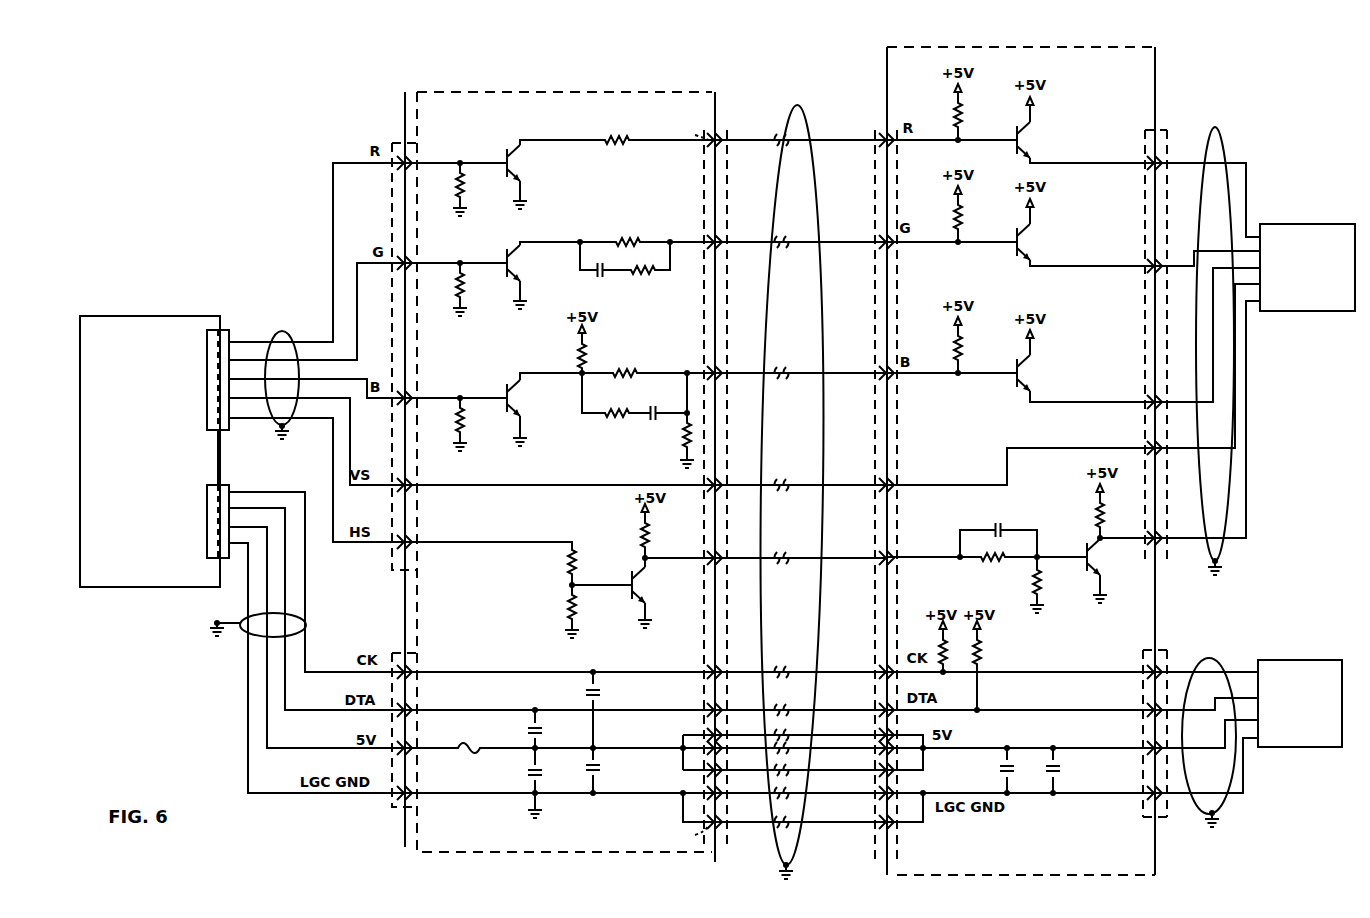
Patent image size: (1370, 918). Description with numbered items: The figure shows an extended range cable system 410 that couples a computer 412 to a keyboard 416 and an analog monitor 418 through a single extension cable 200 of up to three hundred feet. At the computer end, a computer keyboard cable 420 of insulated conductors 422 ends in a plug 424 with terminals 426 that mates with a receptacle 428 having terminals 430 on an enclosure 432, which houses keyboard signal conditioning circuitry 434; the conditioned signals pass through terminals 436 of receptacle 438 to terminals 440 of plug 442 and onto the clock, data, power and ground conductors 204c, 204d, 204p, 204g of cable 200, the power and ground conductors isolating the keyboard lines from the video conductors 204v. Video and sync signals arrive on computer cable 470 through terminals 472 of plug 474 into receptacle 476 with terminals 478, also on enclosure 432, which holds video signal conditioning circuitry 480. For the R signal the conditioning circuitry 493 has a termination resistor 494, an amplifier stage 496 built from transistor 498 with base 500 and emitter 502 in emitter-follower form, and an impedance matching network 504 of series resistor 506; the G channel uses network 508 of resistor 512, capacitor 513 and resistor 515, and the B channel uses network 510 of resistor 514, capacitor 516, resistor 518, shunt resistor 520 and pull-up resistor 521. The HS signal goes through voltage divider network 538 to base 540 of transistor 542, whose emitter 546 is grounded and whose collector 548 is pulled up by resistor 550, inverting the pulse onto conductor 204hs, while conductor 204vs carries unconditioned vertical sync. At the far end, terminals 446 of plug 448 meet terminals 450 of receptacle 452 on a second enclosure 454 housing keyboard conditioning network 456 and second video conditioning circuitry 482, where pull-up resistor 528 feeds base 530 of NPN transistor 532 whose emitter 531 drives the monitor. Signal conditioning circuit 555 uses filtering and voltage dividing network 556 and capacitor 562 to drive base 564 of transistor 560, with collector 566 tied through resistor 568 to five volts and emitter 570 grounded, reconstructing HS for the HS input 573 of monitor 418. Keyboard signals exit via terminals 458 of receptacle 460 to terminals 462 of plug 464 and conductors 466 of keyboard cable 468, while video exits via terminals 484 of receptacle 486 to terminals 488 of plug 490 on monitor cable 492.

The extension cable 200 is at (793, 90).
The video conductors 204v is at (801, 277).
The vertical sync conductor 204vs is at (600, 490).
The horizontal sync conductor 204hs is at (838, 571).
The keyboard clock conductor 204c is at (806, 670).
The power conductor 204p is at (810, 770).
The keyboard data conductor 204d is at (880, 710).
The ground conductor 204g is at (855, 818).
The extended range cable system 410 is at (740, 47).
The computer 412 is at (168, 316).
The keyboard 416 is at (1306, 660).
The analog monitor 418 is at (1330, 311).
The computer keyboard cable 420 is at (228, 711).
The insulated conductors 422 is at (358, 672).
The plug 424 is at (394, 653).
The terminals 426 is at (392, 800).
The receptacle 428 is at (408, 808).
The mating terminals 430 is at (408, 790).
The enclosure 432 is at (508, 92).
The keyboard signal conditioning circuitry 434 is at (622, 830).
The terminals 436 is at (710, 238).
The output receptacle 438 is at (690, 480).
The terminals 440 is at (722, 130).
The cable plug 442 is at (760, 870).
The terminals 446 is at (876, 138).
The cable plug 448 is at (875, 850).
The terminals 450 is at (897, 143).
The receptacle 452 is at (897, 855).
The second enclosure 454 is at (930, 47).
The keyboard signal conditioning network 456 is at (1075, 837).
The terminals 458 is at (1146, 678).
The receptacle 460 is at (1152, 818).
The terminals 462 is at (1168, 825).
The plug 464 is at (1165, 650).
The conductors 466 is at (1222, 760).
The keyboard cable 468 is at (1225, 655).
The computer cable 470 is at (279, 327).
The terminals 472 is at (400, 143).
The plug 474 is at (400, 562).
The receptacle 476 is at (412, 568).
The mating terminals 478 is at (415, 492).
The video signal conditioning circuitry 480 is at (548, 574).
The second video conditioning circuitry 482 is at (1050, 304).
The terminals 484 is at (1147, 160).
The receptacle 486 is at (1145, 140).
The terminals 488 is at (1148, 156).
The plug 490 is at (1150, 128).
The monitor cable 492 is at (1252, 176).
The signal conditioning circuitry 493 is at (550, 200).
The termination resistor 494 is at (462, 190).
The amplifier stage 496 is at (516, 120).
The transistor 498 is at (507, 150).
The base 500 is at (500, 163).
The emitter 502 is at (525, 152).
The impedance matching network 504 is at (670, 185).
The series resistor 506 is at (612, 132).
The impedance matching network 508 is at (660, 320).
The impedance matching network 510 is at (646, 402).
The resistor 512 is at (645, 276).
The capacitor 513 is at (600, 278).
The resistor 514 is at (612, 420).
The resistor 515 is at (628, 236).
The capacitor 516 is at (653, 422).
The resistor 518 is at (624, 368).
The resistor 520 is at (684, 432).
The pull-up resistor 521 is at (588, 352).
The pull-up resistor 528 is at (954, 120).
The base 530 is at (1010, 146).
The emitter 531 is at (1033, 156).
The NPN transistor 532 is at (1010, 130).
The voltage divider network 538 is at (566, 590).
The base 540 is at (576, 560).
The transistor 542 is at (636, 600).
The emitter 546 is at (650, 604).
The collector 548 is at (646, 570).
The pull-up resistor 550 is at (636, 531).
The signal conditioning circuit 555 is at (1086, 521).
The filtering and voltage dividing network 556 is at (981, 589).
The transistor 560 is at (1098, 574).
The capacitor 562 is at (994, 528).
The base 564 is at (1086, 557).
The collector 566 is at (1096, 548).
The resistor 568 is at (1103, 518).
The emitter 570 is at (1102, 570).
The HS input 573 is at (1252, 315).